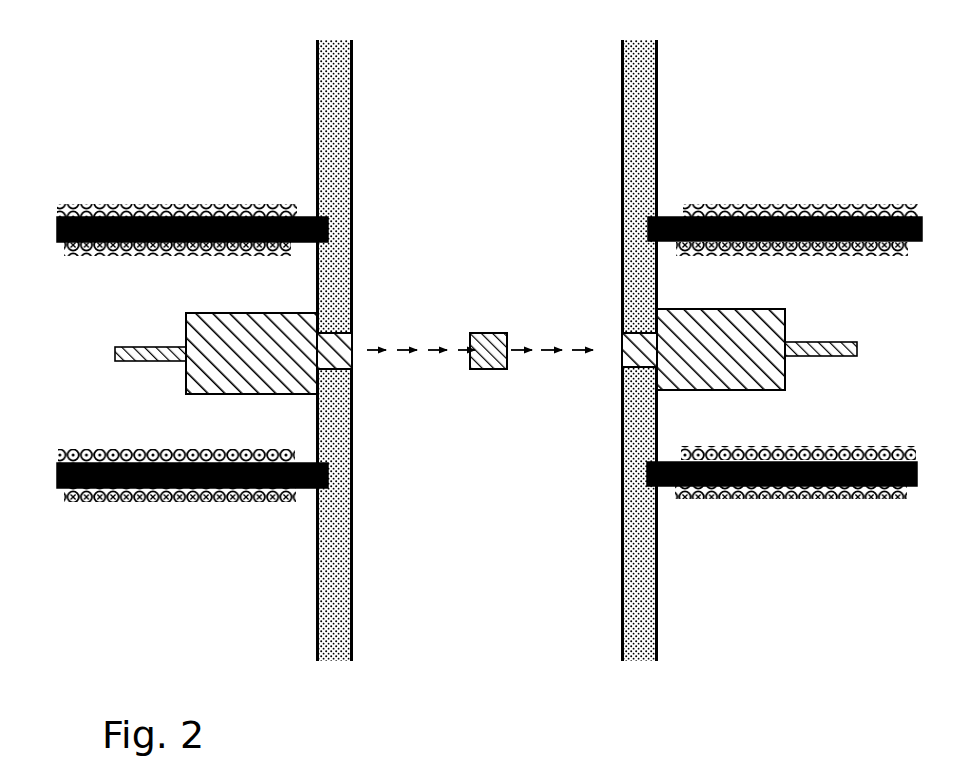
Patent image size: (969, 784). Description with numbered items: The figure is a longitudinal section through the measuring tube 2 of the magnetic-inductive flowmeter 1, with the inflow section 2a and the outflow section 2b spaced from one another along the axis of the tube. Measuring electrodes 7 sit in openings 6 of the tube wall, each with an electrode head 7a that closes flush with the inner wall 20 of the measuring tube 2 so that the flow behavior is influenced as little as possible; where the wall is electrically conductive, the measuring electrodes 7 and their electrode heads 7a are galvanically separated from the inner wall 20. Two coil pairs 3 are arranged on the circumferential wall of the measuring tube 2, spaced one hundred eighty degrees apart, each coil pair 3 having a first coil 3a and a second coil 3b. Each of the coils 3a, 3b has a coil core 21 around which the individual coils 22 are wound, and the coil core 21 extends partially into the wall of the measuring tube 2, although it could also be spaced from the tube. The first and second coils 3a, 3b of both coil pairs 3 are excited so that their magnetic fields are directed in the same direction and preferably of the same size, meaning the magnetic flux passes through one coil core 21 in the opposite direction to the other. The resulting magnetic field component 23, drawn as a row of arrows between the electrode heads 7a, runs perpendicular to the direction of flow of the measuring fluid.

The magnetic-inductive flowmeter 1 is at (82, 99).
The measuring tube 2 is at (317, 62).
The inflow section 2a is at (498, 67).
The outflow section 2b is at (498, 640).
The coil pair 3 is at (471, 430).
The first coil 3a is at (60, 522).
The second coil 3b is at (58, 278).
The opening 6 is at (367, 369).
The measuring electrode 7 is at (155, 362).
The electrode head 7a is at (353, 335).
The inner wall 20 is at (355, 206).
The coil core 21 is at (303, 216).
The individual coils 22 is at (183, 207).
The magnetic field component 23 is at (548, 355).